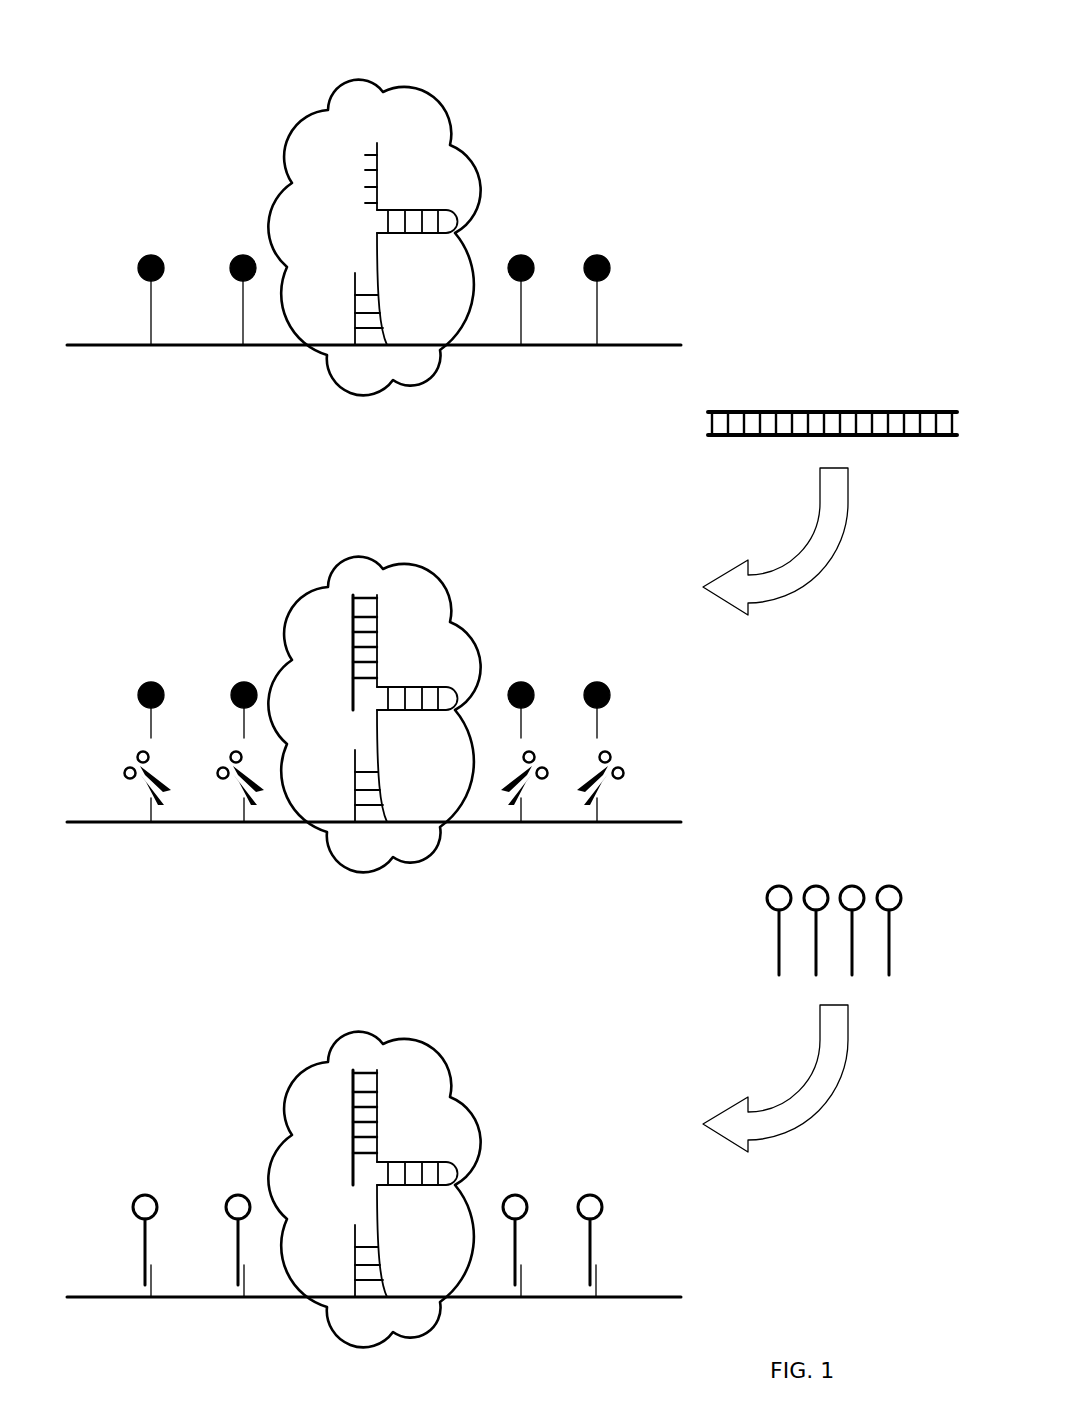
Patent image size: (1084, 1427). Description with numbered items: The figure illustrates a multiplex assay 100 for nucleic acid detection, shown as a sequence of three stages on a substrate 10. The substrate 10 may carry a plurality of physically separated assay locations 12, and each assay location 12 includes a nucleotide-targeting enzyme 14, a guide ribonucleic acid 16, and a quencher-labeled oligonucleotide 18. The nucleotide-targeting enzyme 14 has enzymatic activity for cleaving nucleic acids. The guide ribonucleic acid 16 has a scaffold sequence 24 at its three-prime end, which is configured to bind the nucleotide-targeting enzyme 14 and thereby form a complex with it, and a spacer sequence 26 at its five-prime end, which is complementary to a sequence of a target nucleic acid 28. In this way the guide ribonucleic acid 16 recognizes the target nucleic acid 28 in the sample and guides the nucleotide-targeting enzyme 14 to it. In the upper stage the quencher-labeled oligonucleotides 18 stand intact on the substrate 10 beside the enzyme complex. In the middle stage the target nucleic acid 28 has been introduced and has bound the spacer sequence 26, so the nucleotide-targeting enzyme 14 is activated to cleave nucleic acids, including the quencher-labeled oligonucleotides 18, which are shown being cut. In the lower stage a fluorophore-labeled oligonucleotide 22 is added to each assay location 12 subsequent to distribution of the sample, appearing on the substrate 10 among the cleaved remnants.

The multiplex assay 100 is at (832, 52).
The assay location 12 is at (585, 57).
The substrate 10 is at (104, 345).
The nucleotide-targeting enzyme 14 is at (405, 82).
The guide ribonucleic acid (gRNA) 16 is at (350, 170).
The spacer sequence 26 is at (378, 178).
The scaffold sequence 24 is at (399, 244).
The target nucleic acid 28 is at (829, 388).
The quencher-labeled oligonucleotide 18 is at (600, 245).
The fluorophore-labeled oligonucleotide 22 is at (833, 862).